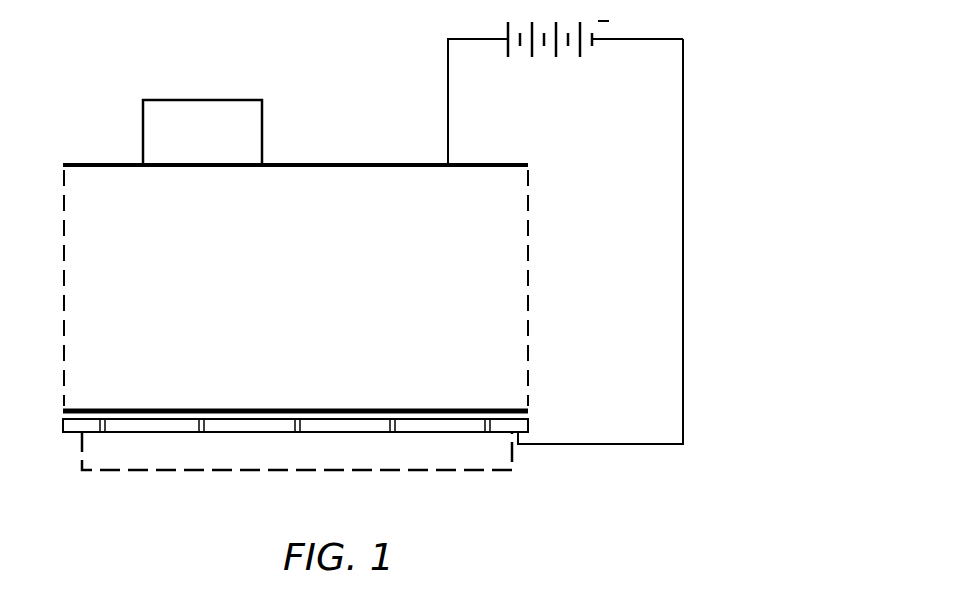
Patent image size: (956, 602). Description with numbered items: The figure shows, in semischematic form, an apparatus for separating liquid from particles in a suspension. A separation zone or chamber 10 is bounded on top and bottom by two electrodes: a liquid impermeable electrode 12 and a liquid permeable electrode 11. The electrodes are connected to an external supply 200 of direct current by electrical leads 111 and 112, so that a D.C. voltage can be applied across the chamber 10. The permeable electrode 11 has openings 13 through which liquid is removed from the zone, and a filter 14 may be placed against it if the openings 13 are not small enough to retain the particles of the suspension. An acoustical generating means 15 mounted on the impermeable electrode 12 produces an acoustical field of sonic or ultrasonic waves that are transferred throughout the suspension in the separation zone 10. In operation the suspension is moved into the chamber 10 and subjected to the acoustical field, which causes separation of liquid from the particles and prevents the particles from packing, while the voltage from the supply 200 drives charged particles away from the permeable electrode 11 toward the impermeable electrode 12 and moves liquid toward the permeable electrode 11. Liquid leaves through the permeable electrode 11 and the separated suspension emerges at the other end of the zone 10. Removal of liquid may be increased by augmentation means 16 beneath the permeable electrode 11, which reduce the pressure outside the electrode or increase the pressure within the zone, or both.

The chamber 10 is at (300, 291).
The liquid permeable electrode 11 is at (73, 432).
The liquid impermeable electrode 12 is at (105, 163).
The openings 13 is at (200, 432).
The filter 14 is at (63, 416).
The acoustical generating means 15 is at (209, 141).
The augmentation means 16 is at (470, 461).
The electrical lead 111 is at (602, 445).
The electrical lead 112 is at (448, 70).
The external supply of direct current 200 is at (533, 50).